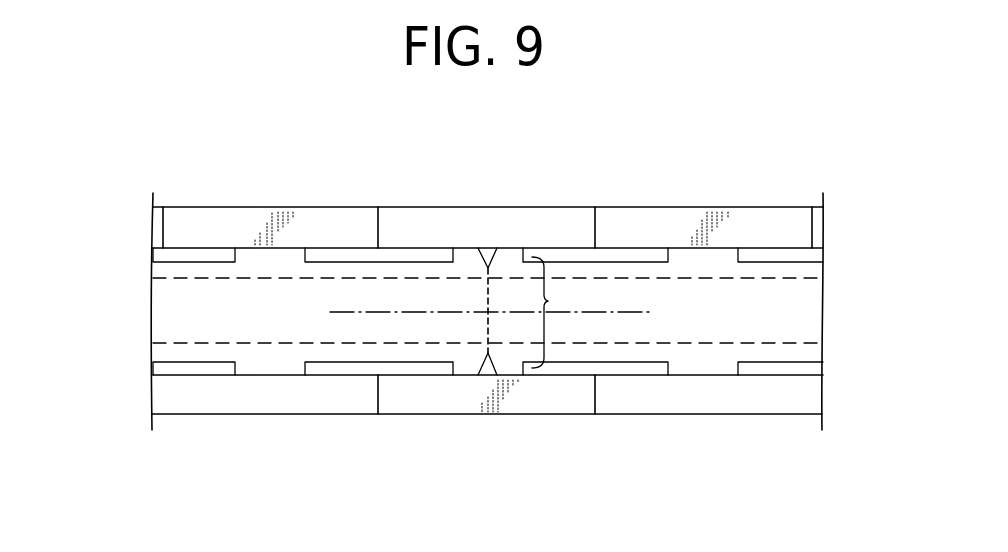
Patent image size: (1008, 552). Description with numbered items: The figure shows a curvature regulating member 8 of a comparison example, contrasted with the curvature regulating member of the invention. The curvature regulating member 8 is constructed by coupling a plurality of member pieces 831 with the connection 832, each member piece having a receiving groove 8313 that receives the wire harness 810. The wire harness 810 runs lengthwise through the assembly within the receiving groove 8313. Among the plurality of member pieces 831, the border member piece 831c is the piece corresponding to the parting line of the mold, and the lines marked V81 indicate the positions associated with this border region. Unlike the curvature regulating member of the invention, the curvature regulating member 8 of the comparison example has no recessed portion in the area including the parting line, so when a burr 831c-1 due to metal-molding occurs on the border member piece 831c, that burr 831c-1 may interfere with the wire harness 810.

The curvature regulating member 8 is at (94, 238).
The member pieces 831 is at (252, 203).
The border member piece 831c is at (462, 205).
The burr 831c-1 is at (465, 343).
The receiving groove 8313 is at (548, 301).
The wire harness 810 is at (282, 344).
The virtual line V81 is at (354, 308).
The connection 832 is at (205, 363).